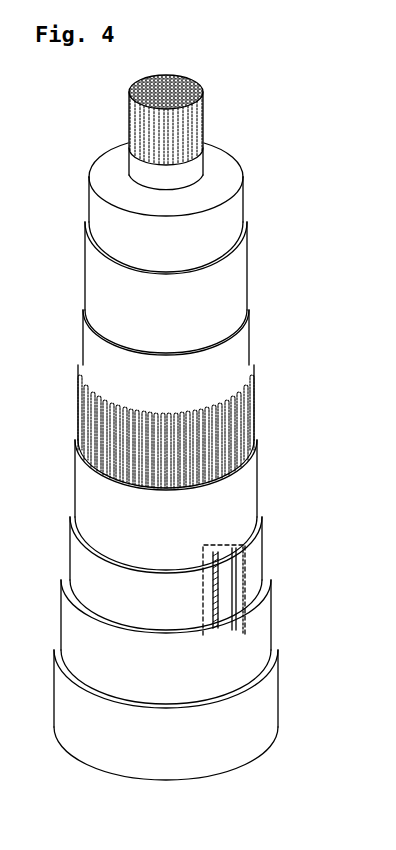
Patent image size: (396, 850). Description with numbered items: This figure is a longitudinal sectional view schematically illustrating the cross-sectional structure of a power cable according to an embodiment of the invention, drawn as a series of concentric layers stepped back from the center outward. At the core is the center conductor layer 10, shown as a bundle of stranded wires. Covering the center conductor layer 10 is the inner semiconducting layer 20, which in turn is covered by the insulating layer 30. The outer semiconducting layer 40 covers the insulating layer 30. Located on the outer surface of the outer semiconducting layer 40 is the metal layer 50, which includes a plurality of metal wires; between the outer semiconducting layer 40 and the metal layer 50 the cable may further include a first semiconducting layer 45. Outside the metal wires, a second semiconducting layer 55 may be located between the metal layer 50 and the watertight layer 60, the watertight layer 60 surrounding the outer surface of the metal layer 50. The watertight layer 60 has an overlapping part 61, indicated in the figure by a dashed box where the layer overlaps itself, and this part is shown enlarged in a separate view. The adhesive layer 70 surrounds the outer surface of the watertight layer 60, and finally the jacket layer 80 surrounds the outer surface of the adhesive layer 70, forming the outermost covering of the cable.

The center conductor layer 10 is at (204, 105).
The inner semiconducting layer 20 is at (207, 152).
The insulating layer 30 is at (217, 215).
The outer semiconducting layer 40 is at (217, 283).
The first semiconducting layer 45 is at (217, 372).
The metal layer 50 is at (240, 430).
The second semiconducting layer 55 is at (237, 495).
The watertight layer 60 is at (245, 555).
The overlapping part 61 is at (248, 588).
The adhesive layer 70 is at (250, 637).
The jacket layer 80 is at (253, 702).